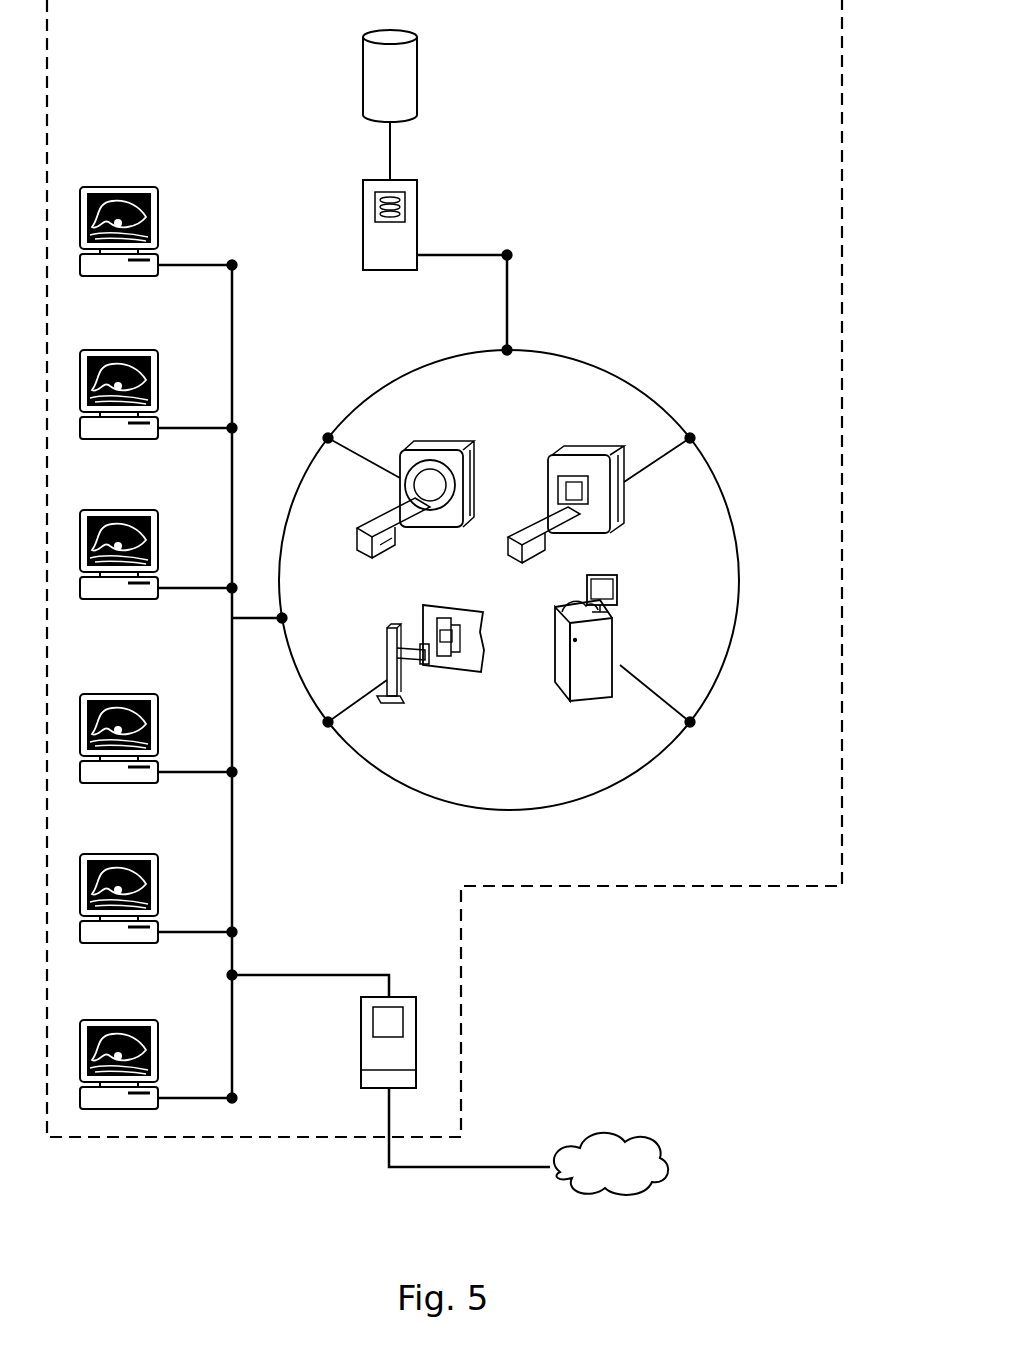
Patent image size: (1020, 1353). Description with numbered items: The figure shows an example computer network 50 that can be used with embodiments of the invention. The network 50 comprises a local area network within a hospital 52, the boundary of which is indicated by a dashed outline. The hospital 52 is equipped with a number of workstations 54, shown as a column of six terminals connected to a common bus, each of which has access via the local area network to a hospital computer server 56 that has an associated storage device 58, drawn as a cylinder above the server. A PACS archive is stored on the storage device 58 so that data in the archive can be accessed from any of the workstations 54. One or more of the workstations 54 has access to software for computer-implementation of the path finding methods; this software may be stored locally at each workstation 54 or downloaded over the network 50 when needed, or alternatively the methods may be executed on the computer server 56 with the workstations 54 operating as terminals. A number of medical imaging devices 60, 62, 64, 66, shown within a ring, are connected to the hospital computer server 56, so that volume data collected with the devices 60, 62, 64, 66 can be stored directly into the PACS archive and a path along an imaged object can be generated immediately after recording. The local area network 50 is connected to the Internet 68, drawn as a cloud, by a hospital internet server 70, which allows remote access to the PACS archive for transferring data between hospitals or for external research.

The network 50 is at (915, 76).
The hospital 52 is at (797, 76).
The workstations 54 is at (125, 187).
The hospital computer server 56 is at (417, 205).
The storage device 58 is at (417, 62).
The medical imaging device 60 is at (437, 449).
The medical imaging device 62 is at (594, 455).
The medical imaging device 64 is at (583, 698).
The medical imaging device 66 is at (398, 679).
The Internet 68 is at (627, 1174).
The hospital internet server 70 is at (416, 1023).